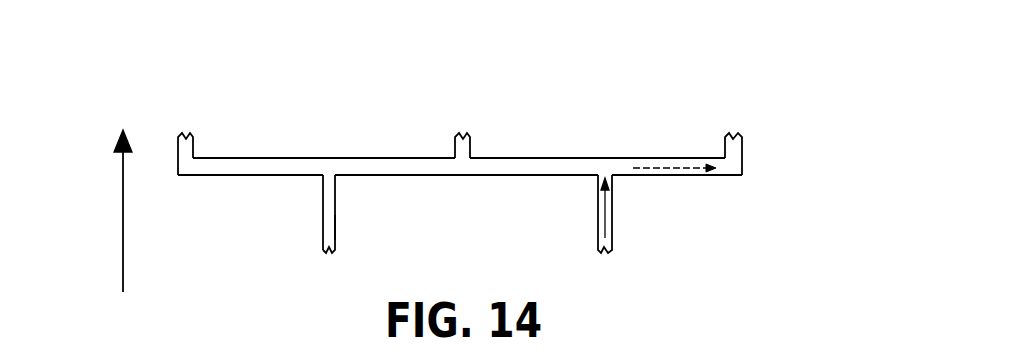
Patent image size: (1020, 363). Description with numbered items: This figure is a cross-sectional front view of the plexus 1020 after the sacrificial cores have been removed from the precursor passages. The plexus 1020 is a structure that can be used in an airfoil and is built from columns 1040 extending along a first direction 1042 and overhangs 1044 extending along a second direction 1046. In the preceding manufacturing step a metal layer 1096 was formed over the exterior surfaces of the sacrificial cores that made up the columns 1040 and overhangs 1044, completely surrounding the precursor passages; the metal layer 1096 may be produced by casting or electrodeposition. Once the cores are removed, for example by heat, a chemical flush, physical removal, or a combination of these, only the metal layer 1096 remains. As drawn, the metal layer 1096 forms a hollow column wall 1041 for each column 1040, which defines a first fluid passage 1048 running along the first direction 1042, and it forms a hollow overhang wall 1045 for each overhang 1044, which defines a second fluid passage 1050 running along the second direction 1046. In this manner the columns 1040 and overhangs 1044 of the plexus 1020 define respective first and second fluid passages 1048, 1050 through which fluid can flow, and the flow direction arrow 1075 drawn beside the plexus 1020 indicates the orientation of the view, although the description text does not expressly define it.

The plexus 1020 is at (758, 123).
The overhang 1044 is at (232, 167).
The metal layer 1096 is at (295, 158).
The second fluid passage 1050 is at (420, 159).
The hollow overhang wall 1045 is at (485, 158).
The second direction 1046 is at (652, 158).
The hollow column wall 1041 is at (323, 245).
The first fluid passage 1048 is at (335, 225).
The column 1040 is at (598, 218).
The first direction 1042 is at (612, 228).
The direction arrow 1075 is at (123, 208).